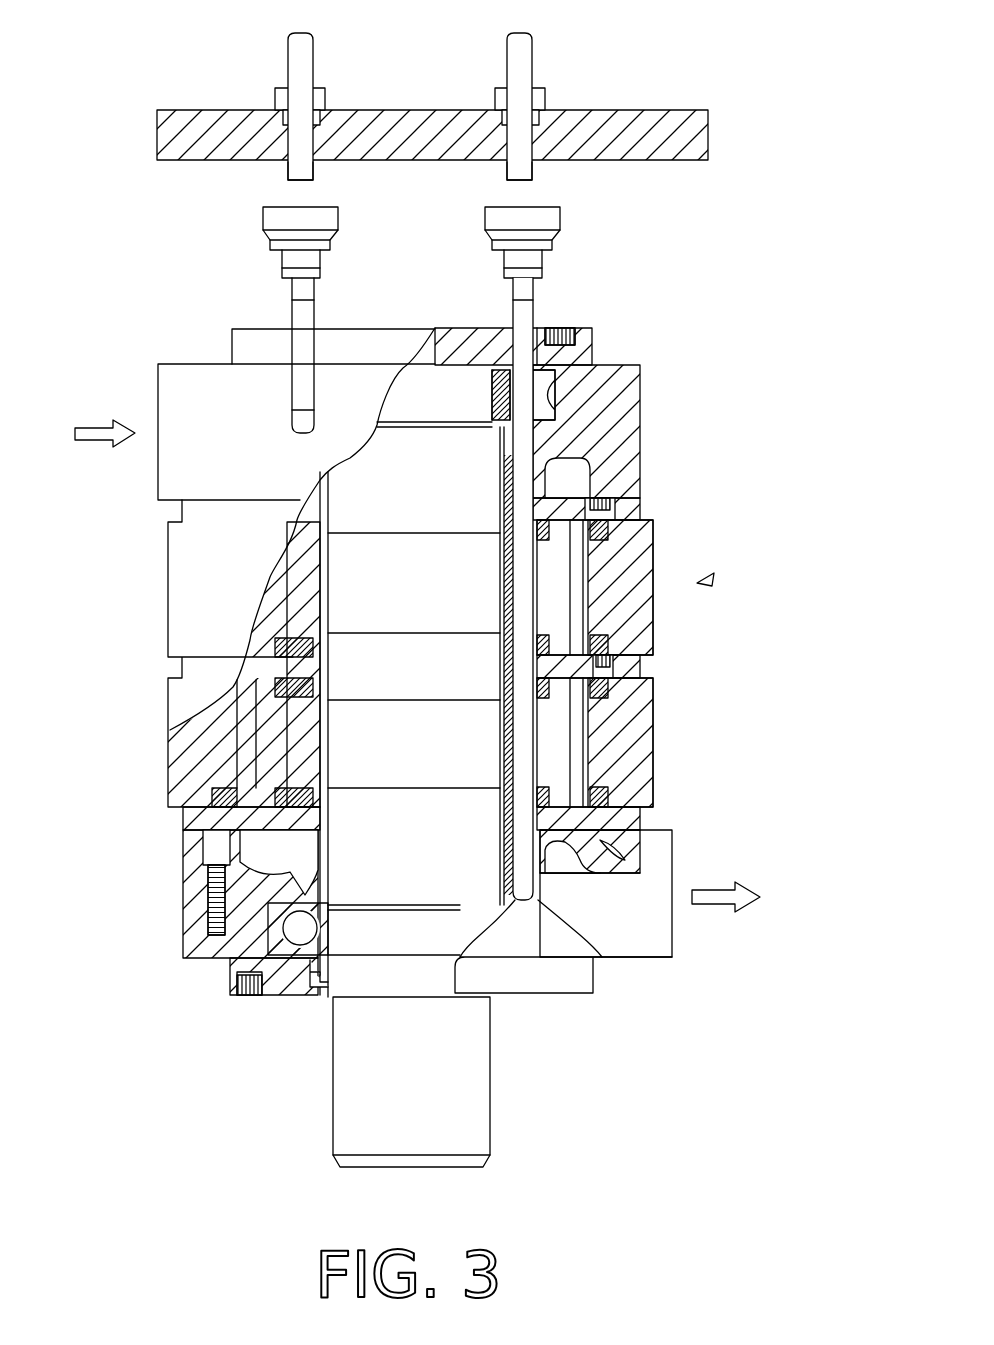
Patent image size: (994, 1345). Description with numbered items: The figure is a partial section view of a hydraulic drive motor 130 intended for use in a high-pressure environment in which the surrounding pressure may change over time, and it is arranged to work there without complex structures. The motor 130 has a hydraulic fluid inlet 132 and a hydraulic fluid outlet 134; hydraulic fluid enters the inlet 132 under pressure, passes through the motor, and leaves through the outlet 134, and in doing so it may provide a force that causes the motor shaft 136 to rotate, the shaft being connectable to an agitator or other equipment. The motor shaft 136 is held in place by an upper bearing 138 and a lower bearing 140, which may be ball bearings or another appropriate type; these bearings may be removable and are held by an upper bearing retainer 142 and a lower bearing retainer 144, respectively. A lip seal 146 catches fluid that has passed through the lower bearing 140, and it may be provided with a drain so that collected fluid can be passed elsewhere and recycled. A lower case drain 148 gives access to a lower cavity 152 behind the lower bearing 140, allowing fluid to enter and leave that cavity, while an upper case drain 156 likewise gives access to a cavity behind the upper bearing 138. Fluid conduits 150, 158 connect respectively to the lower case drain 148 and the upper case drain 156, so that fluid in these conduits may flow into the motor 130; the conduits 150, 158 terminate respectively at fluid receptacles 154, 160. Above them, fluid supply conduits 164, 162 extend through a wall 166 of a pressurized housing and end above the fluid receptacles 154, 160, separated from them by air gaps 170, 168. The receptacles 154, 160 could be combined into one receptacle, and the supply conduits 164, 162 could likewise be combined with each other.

The hydraulic drive motor 130 is at (697, 583).
The hydraulic fluid inlet 132 is at (147, 422).
The hydraulic fluid outlet 134 is at (692, 878).
The motor shaft 136 is at (473, 1100).
The upper bearing 138 is at (542, 328).
The lower bearing 140 is at (280, 980).
The upper bearing retainer 142 is at (580, 348).
The lower bearing retainer 144 is at (302, 983).
The lip seal 146 is at (327, 987).
The lower case drain 148 is at (600, 960).
The fluid conduit 150 is at (523, 315).
The lower cavity 152 is at (510, 885).
The fluid receptacle 154 is at (547, 218).
The upper case drain 156 is at (290, 430).
The fluid conduit 158 is at (298, 322).
The fluid receptacle 160 is at (272, 218).
The fluid supply conduit 162 is at (298, 62).
The fluid supply conduit 164 is at (523, 57).
The wall 166 is at (657, 125).
The air gap 168 is at (280, 193).
The air gap 170 is at (545, 193).